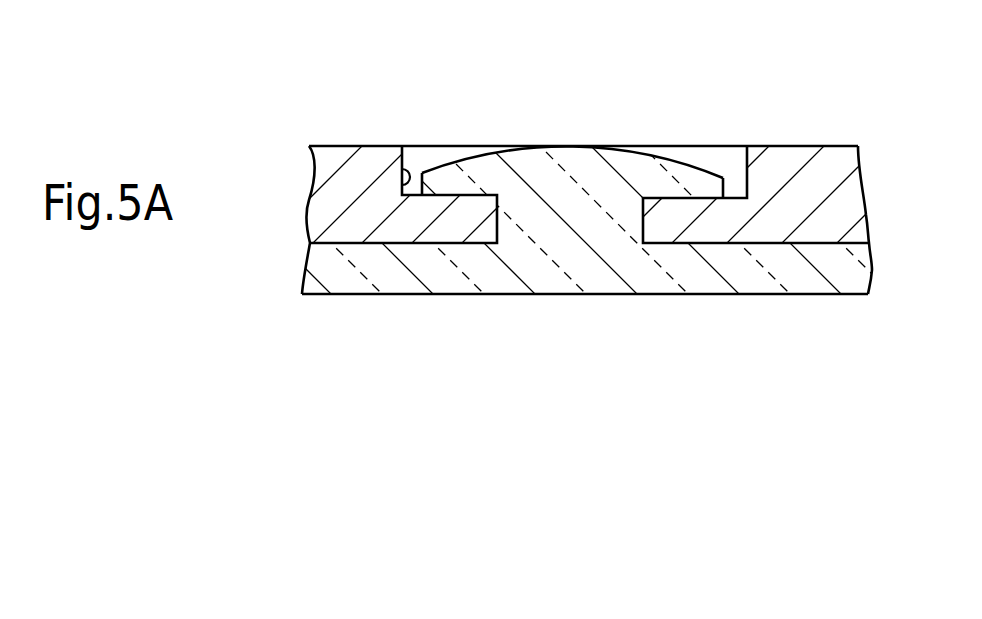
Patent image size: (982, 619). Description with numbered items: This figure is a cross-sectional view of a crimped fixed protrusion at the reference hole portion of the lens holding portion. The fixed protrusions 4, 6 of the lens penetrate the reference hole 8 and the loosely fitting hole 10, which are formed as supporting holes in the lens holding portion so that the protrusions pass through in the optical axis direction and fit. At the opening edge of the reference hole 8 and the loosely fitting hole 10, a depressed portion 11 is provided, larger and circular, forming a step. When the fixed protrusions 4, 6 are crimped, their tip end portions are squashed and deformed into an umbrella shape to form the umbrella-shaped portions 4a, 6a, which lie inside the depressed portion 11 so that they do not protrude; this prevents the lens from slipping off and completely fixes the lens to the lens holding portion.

The fixed protrusion 4 is at (563, 157).
The fixed protrusion 6 is at (563, 157).
The umbrella-shaped portion 4a is at (584, 98).
The umbrella-shaped portion 6a is at (627, 168).
The reference hole 8 is at (574, 271).
The loosely fitting hole 10 is at (631, 233).
The depressed portion 11 is at (400, 186).